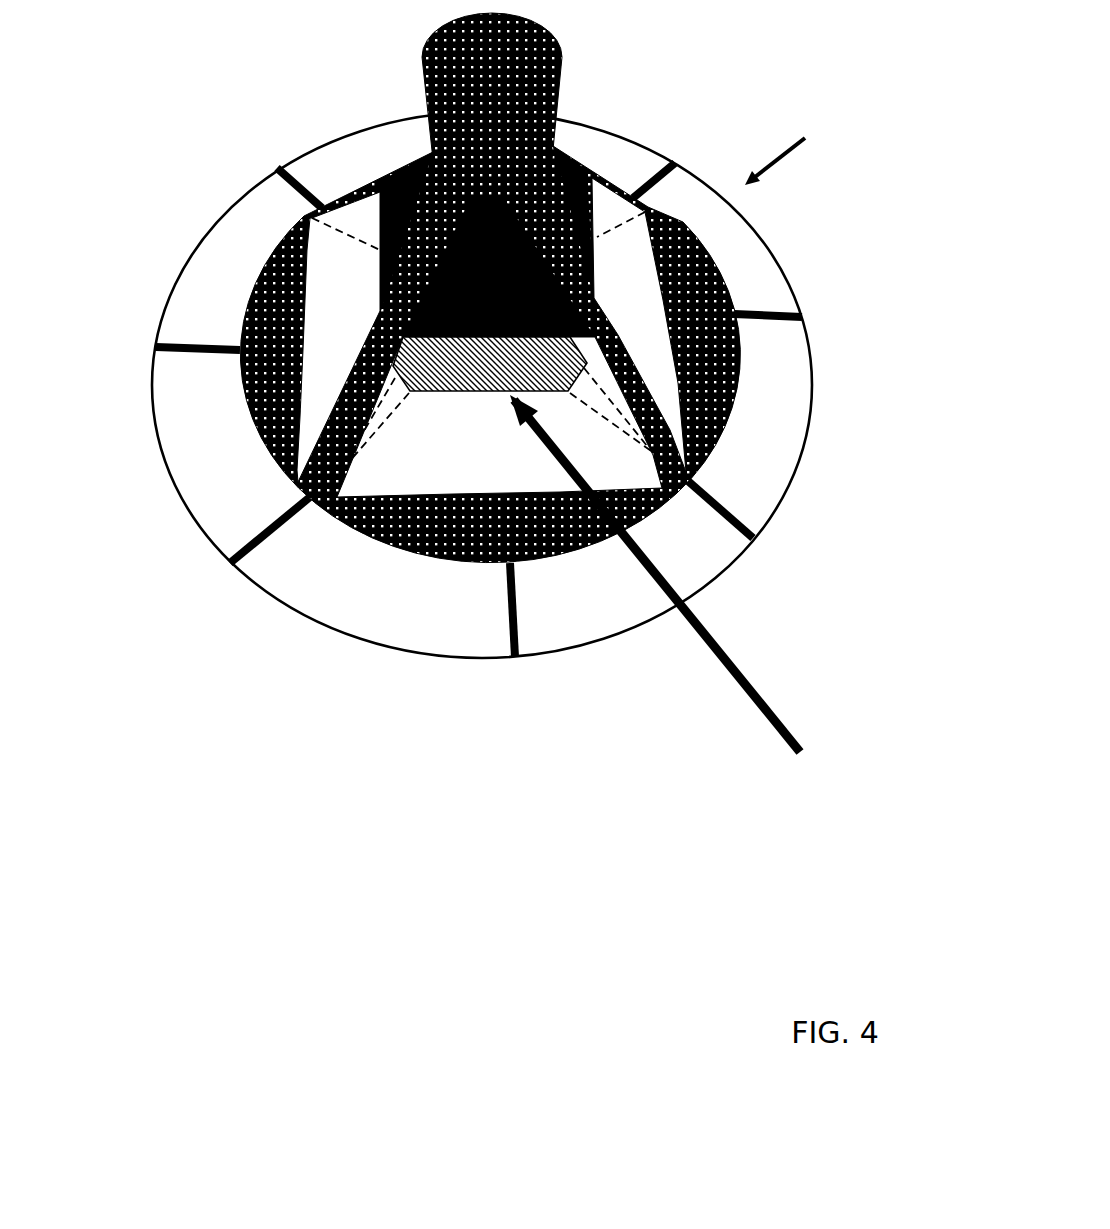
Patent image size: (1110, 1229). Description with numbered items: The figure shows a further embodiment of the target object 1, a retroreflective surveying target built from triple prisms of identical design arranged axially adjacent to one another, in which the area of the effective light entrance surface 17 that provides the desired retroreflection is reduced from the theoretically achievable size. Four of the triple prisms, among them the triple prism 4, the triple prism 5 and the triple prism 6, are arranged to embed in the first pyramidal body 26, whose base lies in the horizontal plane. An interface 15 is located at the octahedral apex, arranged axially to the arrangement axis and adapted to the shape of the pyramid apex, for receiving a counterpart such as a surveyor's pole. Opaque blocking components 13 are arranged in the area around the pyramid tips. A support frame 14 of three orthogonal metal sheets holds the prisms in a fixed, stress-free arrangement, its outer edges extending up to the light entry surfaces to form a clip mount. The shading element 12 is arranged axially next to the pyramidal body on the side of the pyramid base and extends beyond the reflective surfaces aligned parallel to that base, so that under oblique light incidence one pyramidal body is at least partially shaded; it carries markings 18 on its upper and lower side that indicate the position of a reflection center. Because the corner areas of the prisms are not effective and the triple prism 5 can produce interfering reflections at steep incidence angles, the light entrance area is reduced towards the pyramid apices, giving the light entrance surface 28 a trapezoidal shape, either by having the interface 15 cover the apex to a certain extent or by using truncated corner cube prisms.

The target object 1 is at (459, 410).
The triple prism 4 is at (322, 343).
The triple prism 5 is at (478, 469).
The triple prism 6 is at (709, 325).
The shading element 12 is at (422, 385).
The opaque blocking component 13 is at (329, 241).
The support frame 14 is at (559, 354).
The interface 15 is at (557, 86).
The effective light entrance surface 17 is at (355, 504).
The marking 18 is at (735, 507).
The first pyramidal body 26 is at (793, 145).
The light entrance surface 28 is at (646, 601).